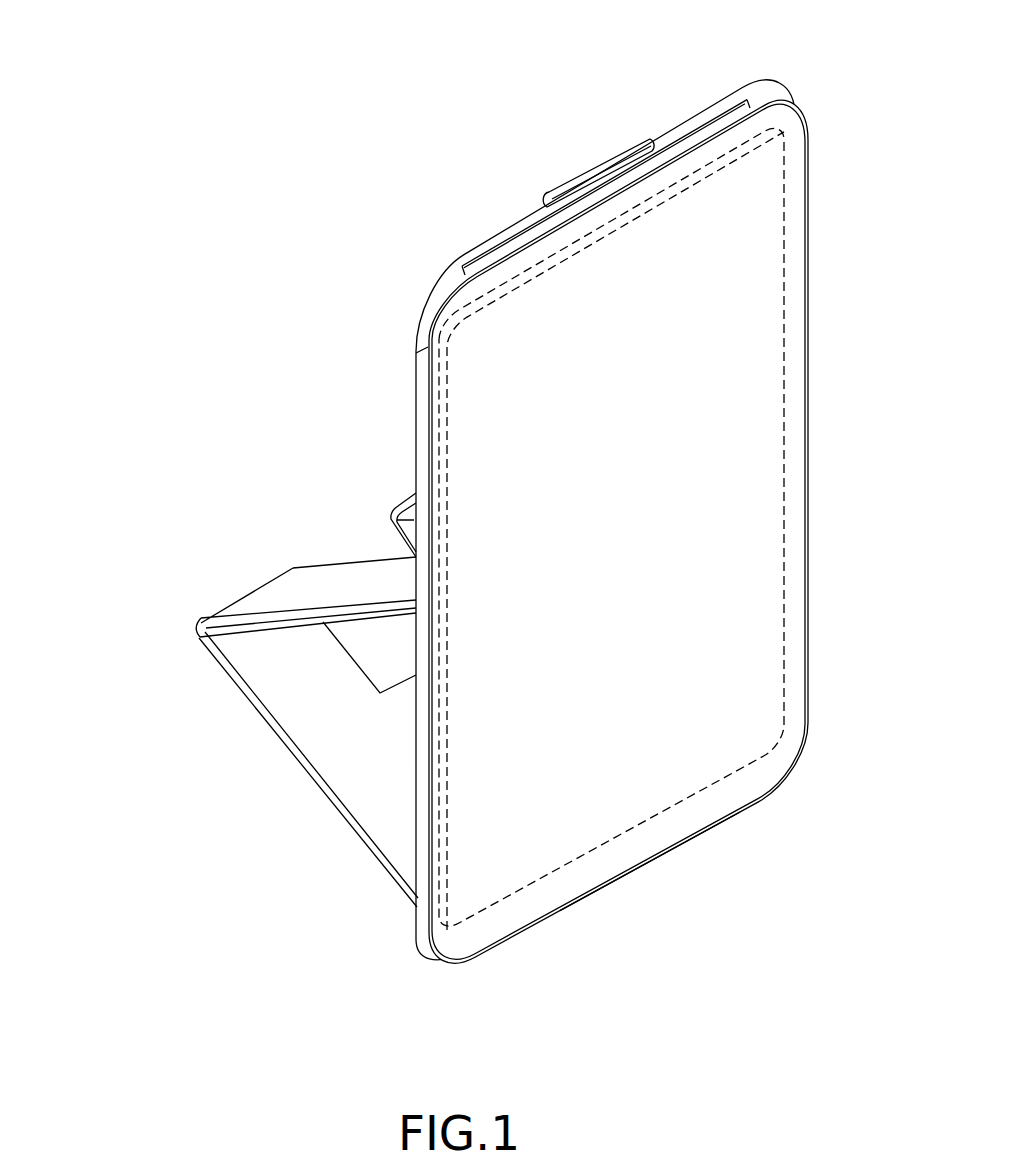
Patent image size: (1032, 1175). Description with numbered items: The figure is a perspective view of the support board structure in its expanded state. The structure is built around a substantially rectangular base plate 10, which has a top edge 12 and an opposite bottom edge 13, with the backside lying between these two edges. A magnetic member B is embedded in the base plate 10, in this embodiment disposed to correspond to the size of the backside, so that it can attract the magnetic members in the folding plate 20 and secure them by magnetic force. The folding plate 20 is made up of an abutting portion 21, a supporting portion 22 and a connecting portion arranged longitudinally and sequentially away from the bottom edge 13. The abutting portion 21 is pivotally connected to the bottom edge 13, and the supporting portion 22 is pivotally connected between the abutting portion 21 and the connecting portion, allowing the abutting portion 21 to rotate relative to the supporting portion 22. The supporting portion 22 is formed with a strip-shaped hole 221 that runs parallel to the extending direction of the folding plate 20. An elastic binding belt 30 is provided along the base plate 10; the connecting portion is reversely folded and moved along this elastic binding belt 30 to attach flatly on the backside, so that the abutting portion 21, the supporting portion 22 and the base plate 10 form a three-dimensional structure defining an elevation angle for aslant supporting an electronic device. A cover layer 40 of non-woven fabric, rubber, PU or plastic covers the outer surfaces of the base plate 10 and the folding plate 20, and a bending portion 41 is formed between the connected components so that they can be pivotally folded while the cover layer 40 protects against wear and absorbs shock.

The base plate 10 is at (819, 271).
The top edge 12 is at (693, 126).
The bottom edge 13 is at (522, 934).
The folding plate 20 is at (218, 696).
The abutting portion 21 is at (287, 690).
The supporting portion 22 is at (268, 600).
The strip-shaped hole 221 is at (367, 635).
The elastic binding belt 30 is at (572, 181).
The cover layer 40 is at (792, 538).
The bending portion 41 is at (202, 632).
The magnetic member B is at (785, 622).